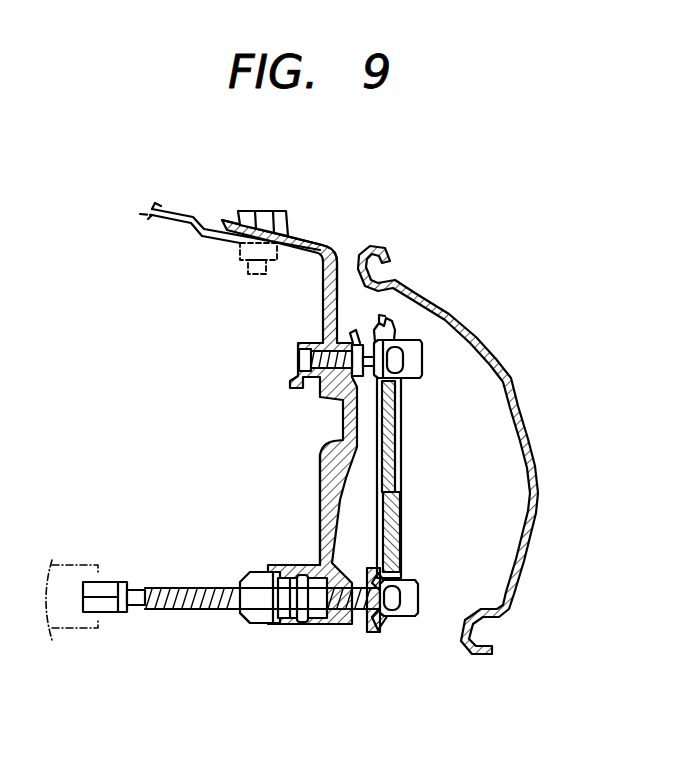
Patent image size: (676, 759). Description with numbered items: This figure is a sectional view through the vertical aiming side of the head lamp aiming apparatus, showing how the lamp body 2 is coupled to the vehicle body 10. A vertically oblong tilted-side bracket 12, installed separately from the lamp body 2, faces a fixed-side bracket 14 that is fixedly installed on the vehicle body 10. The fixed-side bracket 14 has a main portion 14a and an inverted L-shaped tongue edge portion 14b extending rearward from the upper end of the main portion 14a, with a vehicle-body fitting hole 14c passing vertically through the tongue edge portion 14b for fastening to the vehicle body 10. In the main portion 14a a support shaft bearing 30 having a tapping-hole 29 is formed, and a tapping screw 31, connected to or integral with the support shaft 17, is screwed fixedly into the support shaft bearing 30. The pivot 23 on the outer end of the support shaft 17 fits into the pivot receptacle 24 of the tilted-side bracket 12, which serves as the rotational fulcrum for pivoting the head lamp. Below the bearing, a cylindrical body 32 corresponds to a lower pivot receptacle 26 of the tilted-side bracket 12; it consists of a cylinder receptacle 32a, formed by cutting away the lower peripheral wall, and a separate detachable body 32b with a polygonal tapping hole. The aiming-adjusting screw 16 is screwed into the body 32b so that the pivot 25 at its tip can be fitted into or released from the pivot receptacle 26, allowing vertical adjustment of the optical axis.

The lamp body 2 is at (509, 376).
The vehicle body 10 is at (188, 206).
The tilted-side bracket 12 is at (398, 438).
The fixed-side bracket 14 is at (285, 399).
The main portion 14a is at (323, 513).
The tongue edge portion 14b is at (298, 236).
The vehicle-body fitting hole 14c is at (267, 211).
The aiming-adjusting screw 16 is at (177, 605).
The support shaft 17 is at (381, 327).
The pivot 23 is at (395, 360).
The pivot receptacle 24 is at (424, 355).
The pivot 25 is at (403, 582).
The pivot receptacle 26 is at (417, 618).
The tapping-hole 29 is at (348, 340).
The support shaft bearing 30 is at (300, 343).
The tapping screw 31 is at (300, 358).
The cylindrical body 32 is at (234, 607).
The cylinder receptacle 32a is at (272, 622).
The body 32b is at (312, 627).